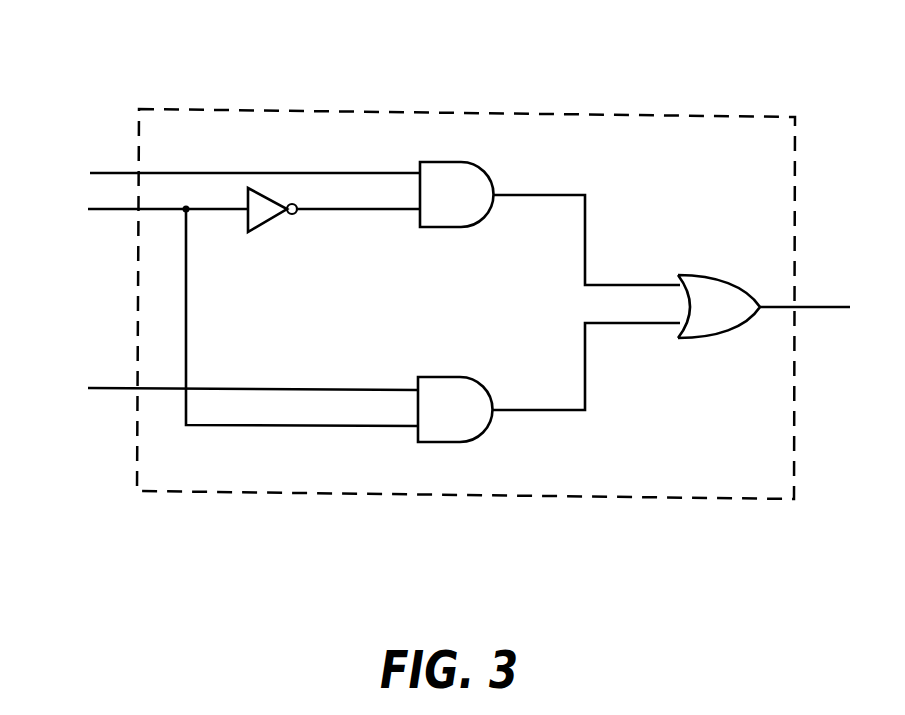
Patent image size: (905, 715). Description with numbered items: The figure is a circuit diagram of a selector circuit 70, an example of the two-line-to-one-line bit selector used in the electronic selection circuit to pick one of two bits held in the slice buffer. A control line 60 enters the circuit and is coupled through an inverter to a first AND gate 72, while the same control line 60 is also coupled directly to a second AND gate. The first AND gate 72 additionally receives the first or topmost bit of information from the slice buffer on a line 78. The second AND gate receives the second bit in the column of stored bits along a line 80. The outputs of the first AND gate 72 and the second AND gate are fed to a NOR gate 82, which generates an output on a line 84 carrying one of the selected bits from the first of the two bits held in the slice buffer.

The selector circuit 70 is at (680, 53).
The first AND gate 72 is at (447, 170).
The line 78 is at (100, 172).
The control line 60 is at (100, 208).
The line 80 is at (98, 387).
The NOR gate 82 is at (715, 280).
The line 84 is at (827, 305).